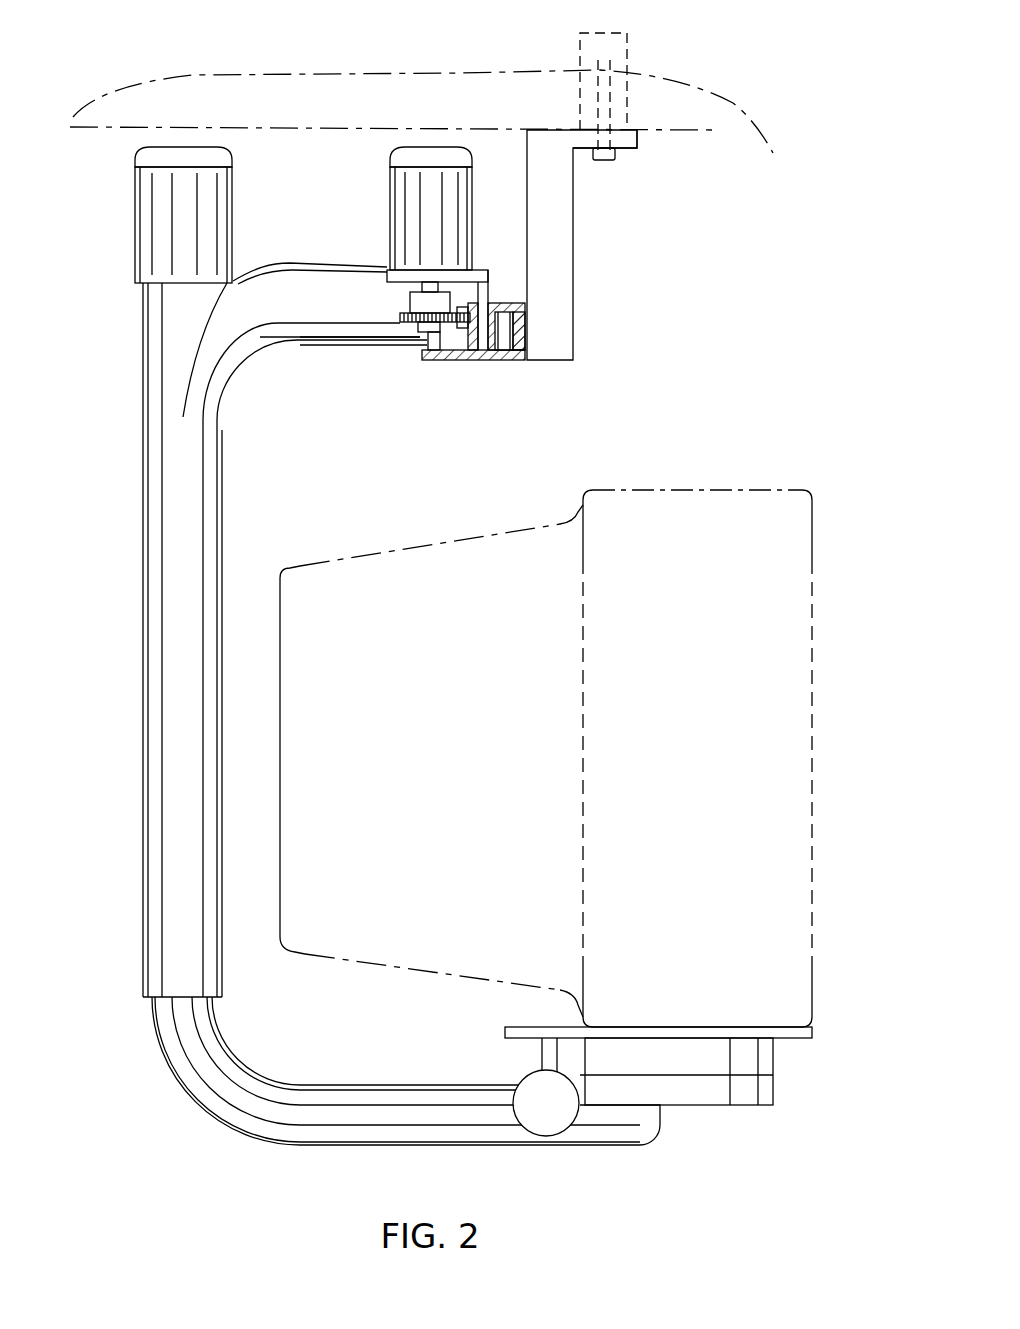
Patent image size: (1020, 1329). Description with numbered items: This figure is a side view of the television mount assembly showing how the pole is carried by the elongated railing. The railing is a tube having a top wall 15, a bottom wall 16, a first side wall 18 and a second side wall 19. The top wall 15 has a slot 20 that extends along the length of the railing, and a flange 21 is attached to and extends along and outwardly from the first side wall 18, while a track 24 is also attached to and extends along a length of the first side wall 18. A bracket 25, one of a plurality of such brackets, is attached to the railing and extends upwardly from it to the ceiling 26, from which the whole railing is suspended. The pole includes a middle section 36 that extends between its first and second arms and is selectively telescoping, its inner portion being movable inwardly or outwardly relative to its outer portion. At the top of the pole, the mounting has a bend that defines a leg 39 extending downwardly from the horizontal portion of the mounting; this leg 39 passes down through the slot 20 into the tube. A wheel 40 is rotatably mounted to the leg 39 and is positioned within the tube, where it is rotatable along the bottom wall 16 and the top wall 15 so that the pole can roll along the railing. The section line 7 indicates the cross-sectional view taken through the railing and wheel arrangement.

The section line 7- 7 is at (505, 287).
The top wall 15 is at (520, 298).
The bottom wall 16 is at (507, 352).
The first side wall 18 is at (530, 345).
The second side wall 19 is at (463, 352).
The slot 20 is at (487, 307).
The flange 21 is at (429, 357).
The track 24 is at (463, 307).
The bracket 25 is at (557, 197).
The ceiling 26 is at (712, 133).
The middle section 36 is at (153, 721).
The leg 39 is at (483, 322).
The wheel 40 is at (514, 315).